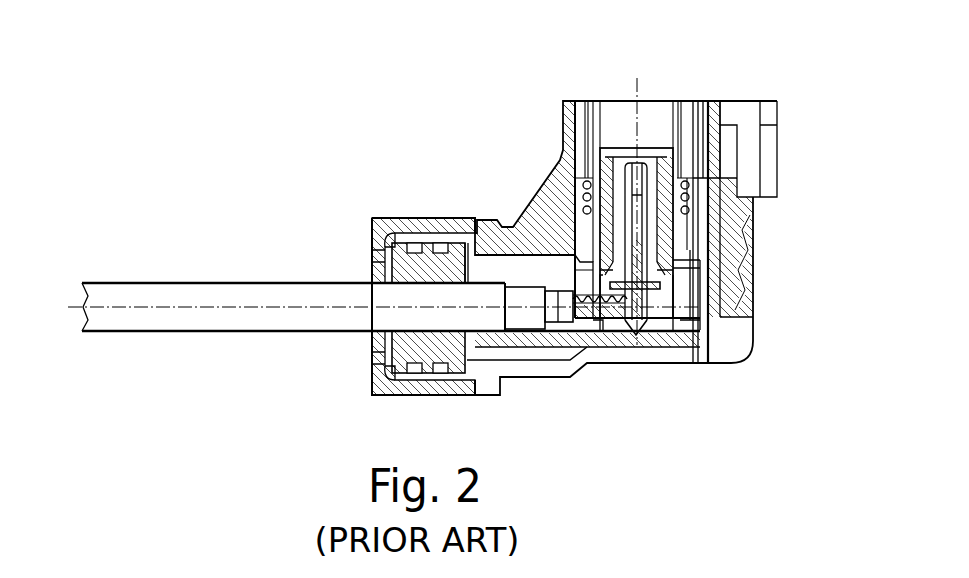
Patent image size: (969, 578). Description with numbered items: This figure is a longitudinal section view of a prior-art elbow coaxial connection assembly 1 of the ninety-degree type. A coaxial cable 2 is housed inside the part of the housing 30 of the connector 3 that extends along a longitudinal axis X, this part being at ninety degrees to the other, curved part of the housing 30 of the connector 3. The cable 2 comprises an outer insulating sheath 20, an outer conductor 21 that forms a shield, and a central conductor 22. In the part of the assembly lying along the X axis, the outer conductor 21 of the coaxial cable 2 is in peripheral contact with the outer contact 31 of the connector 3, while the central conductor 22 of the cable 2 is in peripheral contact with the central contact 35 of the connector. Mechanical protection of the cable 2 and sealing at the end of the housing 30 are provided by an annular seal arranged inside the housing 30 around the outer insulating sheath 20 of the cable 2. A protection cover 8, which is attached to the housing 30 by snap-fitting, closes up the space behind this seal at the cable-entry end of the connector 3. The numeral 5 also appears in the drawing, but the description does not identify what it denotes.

The coaxial connection assembly 1 is at (228, 147).
The coaxial cable 2 is at (172, 228).
The connector 3 is at (434, 165).
The gland nut 5 is at (375, 256).
The protection cover 8 is at (364, 338).
The outer insulating sheath 20 is at (106, 283).
The outer conductor 21 is at (528, 344).
The central conductor 22 is at (591, 328).
The housing 30 is at (540, 206).
The outer contact 31 is at (605, 327).
The central contact 35 is at (615, 325).